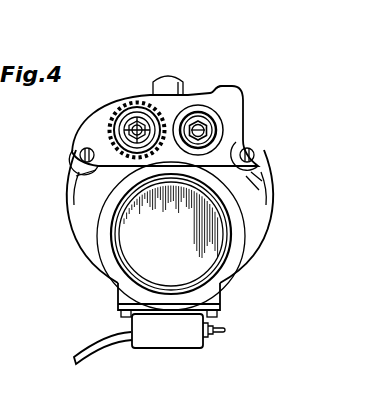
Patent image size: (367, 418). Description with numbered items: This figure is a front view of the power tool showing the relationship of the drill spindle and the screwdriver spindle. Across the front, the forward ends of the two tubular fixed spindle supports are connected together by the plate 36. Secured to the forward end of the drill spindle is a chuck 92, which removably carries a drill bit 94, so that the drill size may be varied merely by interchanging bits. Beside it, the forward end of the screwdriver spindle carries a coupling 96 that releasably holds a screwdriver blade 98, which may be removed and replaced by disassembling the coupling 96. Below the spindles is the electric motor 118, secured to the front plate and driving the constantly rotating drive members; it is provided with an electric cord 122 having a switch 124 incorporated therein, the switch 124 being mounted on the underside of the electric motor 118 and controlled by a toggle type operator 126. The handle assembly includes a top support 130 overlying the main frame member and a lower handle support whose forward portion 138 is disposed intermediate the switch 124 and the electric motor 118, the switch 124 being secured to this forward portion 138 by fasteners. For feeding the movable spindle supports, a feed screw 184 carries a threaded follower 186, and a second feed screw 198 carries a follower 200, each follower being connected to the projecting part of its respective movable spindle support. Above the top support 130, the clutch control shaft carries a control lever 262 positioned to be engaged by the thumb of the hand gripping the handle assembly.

The plate 36 is at (193, 100).
The chuck 92 is at (134, 126).
The drill bit 94 is at (125, 128).
The coupling 96 is at (216, 122).
The screwdriver blade 98 is at (194, 136).
The electric motor 118 is at (103, 233).
The electric cord 122 is at (101, 350).
The switch 124 is at (173, 345).
The toggle type operator 126 is at (216, 334).
The top support 130 is at (153, 93).
The forward portion 138 is at (221, 301).
The feed screw 184 is at (257, 155).
The follower 186 is at (237, 140).
The feed screw 198 is at (83, 155).
The follower 200 is at (88, 142).
The control lever 262 is at (228, 92).